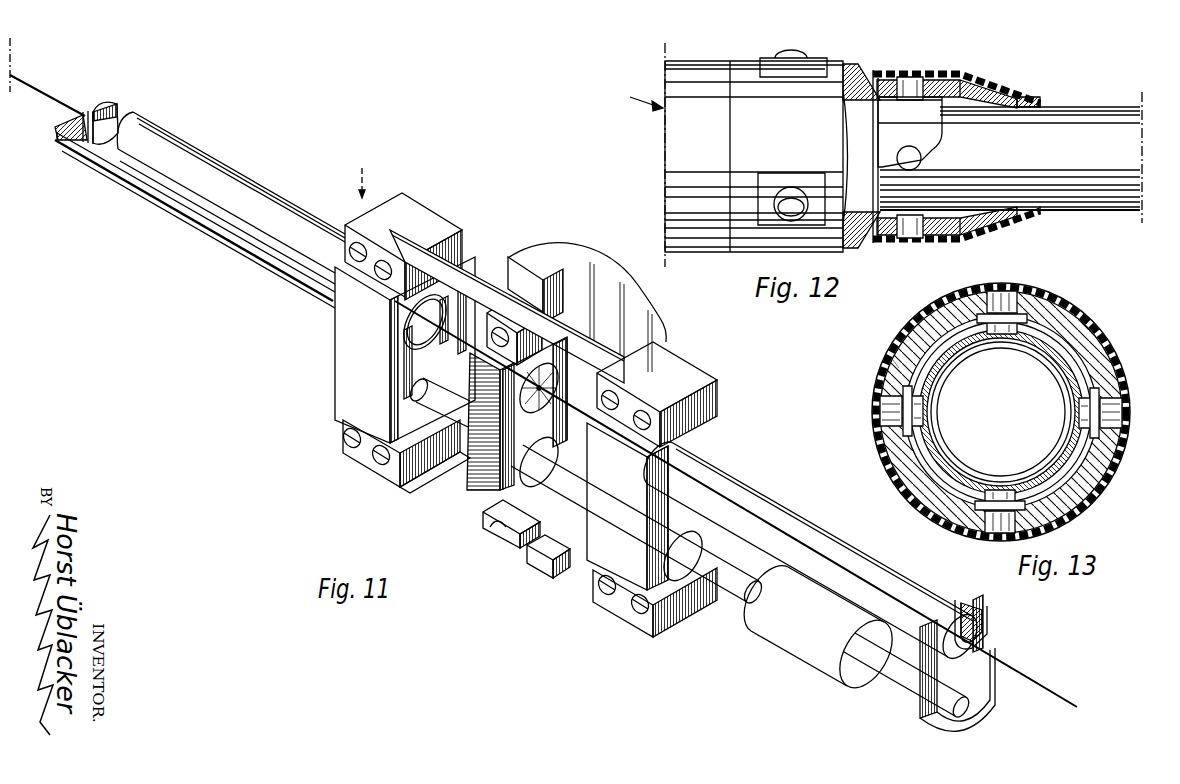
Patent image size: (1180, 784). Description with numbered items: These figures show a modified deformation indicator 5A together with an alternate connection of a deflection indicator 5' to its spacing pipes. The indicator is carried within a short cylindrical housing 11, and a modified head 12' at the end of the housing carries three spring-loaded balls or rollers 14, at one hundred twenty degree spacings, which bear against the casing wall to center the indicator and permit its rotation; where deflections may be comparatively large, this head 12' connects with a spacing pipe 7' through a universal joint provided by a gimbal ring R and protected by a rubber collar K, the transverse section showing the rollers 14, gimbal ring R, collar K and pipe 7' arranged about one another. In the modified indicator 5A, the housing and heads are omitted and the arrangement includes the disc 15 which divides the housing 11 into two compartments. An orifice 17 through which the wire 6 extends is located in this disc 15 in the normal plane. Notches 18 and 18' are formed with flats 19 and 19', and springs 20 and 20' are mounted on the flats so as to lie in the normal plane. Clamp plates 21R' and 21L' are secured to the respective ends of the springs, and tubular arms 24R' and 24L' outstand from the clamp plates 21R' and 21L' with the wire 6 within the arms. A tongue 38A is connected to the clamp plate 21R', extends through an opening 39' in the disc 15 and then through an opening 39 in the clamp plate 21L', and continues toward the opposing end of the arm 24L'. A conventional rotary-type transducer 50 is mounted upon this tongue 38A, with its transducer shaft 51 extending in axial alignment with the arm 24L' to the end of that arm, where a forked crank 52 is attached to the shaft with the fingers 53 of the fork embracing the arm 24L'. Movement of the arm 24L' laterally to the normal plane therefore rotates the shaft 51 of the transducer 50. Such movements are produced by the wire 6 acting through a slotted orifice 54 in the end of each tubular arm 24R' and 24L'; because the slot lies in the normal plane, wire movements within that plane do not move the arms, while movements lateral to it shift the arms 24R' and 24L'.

In FIG. 11, the wire 6 is at (24, 74).
In FIG. 11, the slotted orifice 54 is at (86, 113).
In FIG. 11, the tubular arm 24R' is at (200, 210).
In FIG. 11, the modified deformation indicator 5A is at (362, 192).
In FIG. 11, the clamp plate 21R' is at (410, 244).
In FIG. 11, the spring 20 is at (507, 301).
In FIG. 11, the notch 18 is at (509, 298).
In FIG. 11, the flat 19 is at (525, 290).
In FIG. 11, the disc 15 is at (620, 301).
In FIG. 11, the tongue 38A is at (421, 391).
In FIG. 11, the orifice 17 is at (543, 381).
In FIG. 11, the clamp plate 21L' is at (678, 394).
In FIG. 11, the spring 20' is at (435, 479).
In FIG. 11, the opening 39' is at (497, 476).
In FIG. 11, the notch 18' is at (500, 535).
In FIG. 11, the flat 19' is at (533, 565).
In FIG. 11, the opening 39 is at (662, 556).
In FIG. 11, the tubular arm 24L' is at (814, 553).
In FIG. 11, the rotary-type transducer 50 is at (798, 638).
In FIG. 11, the transducer shaft 51 is at (903, 689).
In FIG. 11, the forked crank 52 is at (967, 678).
In FIG. 11, the fingers 53 is at (926, 628).
In FIG. 12, the cylindrical housing 11 is at (697, 73).
In FIG. 12, the spring-loaded balls or rollers 14 is at (788, 52).
In FIG. 12, the modified head 12' is at (858, 139).
In FIG. 13, the modified head 12' is at (867, 375).
In FIG. 12, the deflection indicator 5' is at (637, 98).
In FIG. 12, the gimbal ring R is at (928, 115).
In FIG. 13, the gimbal ring R is at (1075, 371).
In FIG. 12, the rubber collar K is at (984, 86).
In FIG. 13, the rubber collar K is at (1094, 327).
In FIG. 12, the spacing pipe 7' is at (1010, 153).
In FIG. 13, the spacing pipe 7' is at (1001, 412).